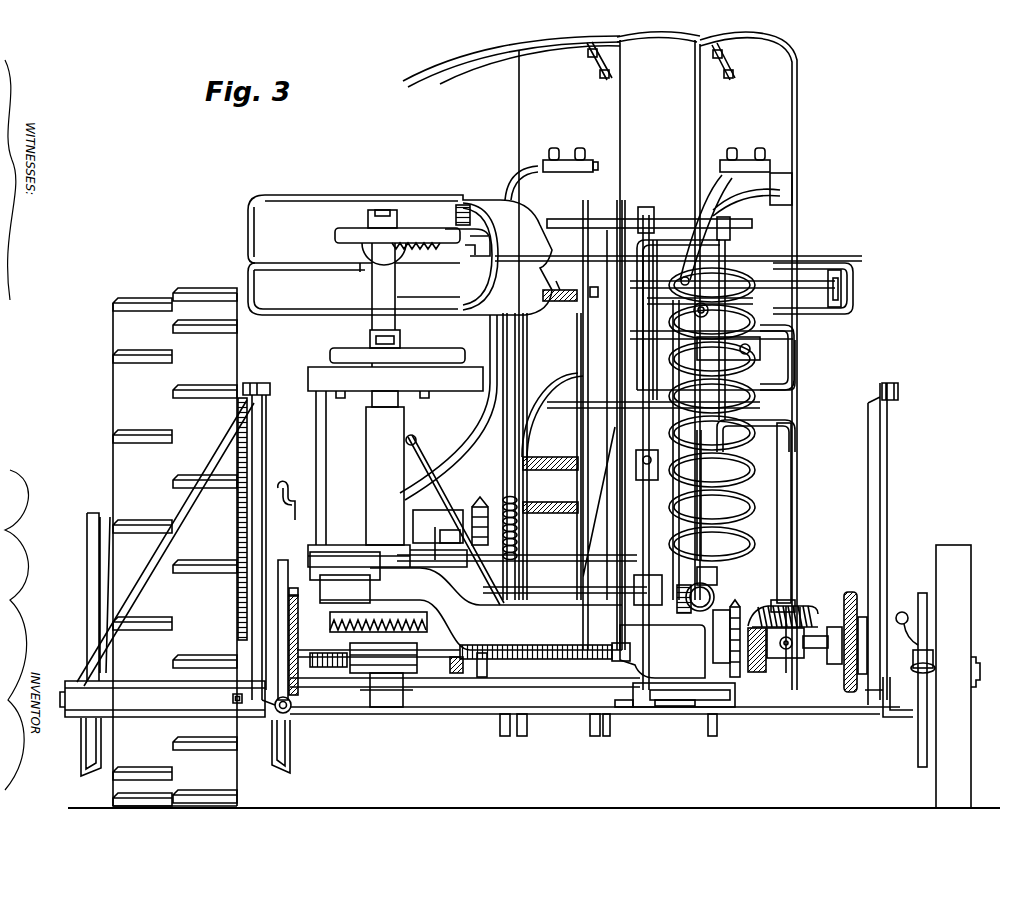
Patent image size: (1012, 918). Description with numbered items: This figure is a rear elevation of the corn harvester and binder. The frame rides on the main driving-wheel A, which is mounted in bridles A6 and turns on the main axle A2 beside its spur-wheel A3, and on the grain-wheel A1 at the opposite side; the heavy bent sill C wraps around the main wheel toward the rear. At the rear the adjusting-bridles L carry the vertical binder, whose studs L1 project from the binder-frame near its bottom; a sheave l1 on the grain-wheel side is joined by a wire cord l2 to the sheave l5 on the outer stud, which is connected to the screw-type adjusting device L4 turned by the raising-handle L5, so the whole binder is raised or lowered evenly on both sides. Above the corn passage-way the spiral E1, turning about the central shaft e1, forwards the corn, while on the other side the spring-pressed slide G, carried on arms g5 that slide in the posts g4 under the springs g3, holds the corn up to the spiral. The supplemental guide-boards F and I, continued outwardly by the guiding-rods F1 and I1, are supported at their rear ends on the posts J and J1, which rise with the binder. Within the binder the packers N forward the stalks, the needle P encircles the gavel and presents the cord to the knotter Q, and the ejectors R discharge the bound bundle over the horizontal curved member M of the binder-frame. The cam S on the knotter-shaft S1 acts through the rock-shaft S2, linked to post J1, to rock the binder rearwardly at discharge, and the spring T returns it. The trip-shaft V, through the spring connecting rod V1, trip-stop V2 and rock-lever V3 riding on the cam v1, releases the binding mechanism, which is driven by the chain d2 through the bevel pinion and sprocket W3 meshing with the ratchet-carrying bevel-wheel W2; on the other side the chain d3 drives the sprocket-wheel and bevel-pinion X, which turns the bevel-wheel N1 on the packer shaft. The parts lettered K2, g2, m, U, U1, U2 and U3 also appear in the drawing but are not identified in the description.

The supplemental guiding-rod I1 is at (447, 76).
The supplemental guiding-rod F1 is at (645, 40).
The supplemental guiding-board I is at (526, 126).
The post J1 is at (537, 168).
The post J is at (716, 162).
The supplemental guide-board F is at (793, 143).
The knotter-shaft S1 is at (383, 208).
The ejectors R is at (396, 221).
The casing K2 is at (400, 255).
The knotter Q is at (470, 256).
The packers N is at (610, 228).
The needle P is at (823, 257).
The springs g3 is at (562, 301).
The arms g5 is at (595, 297).
The posts g4 is at (582, 368).
The spring-pressed slide G is at (622, 338).
The rod g2 is at (618, 383).
The main driving-wheel A is at (175, 547).
The adjusting-bridles L is at (263, 398).
The spur-wheel A3 is at (246, 462).
The raising-handle L5 is at (284, 490).
The cam S is at (333, 357).
The rock-shaft S2 is at (317, 435).
The main axle A2 is at (284, 538).
The sheave l5 is at (296, 600).
The chain d2 is at (485, 507).
The spring T is at (513, 530).
The spiral E1 is at (755, 492).
The central shaft e1 is at (704, 541).
The trip-shaft V is at (645, 542).
The bevel-wheel W2 is at (414, 617).
The horizontal curved arm M is at (466, 601).
The spring connecting rod V1 is at (580, 650).
The bracket m is at (662, 651).
The chain d3 is at (731, 608).
The sprocket-wheel and bevel-pinion X is at (766, 607).
The bevel-wheel N1 is at (808, 607).
The sheave l1 is at (849, 596).
The studs L1 is at (820, 637).
The grain-wheel A1 is at (970, 559).
The bridles A6 is at (93, 587).
The bent sill C is at (80, 697).
The trip-stop V2 is at (306, 667).
The rock-lever V3 is at (335, 673).
The bearing U2 is at (407, 706).
The bevel pinion and sprocket W3 is at (463, 680).
The bar U1 is at (626, 708).
The block U3 is at (660, 706).
The bracket U is at (698, 701).
The cord l2 is at (293, 708).
The adjusting device L4 is at (274, 710).
The cam v1 is at (555, 279).